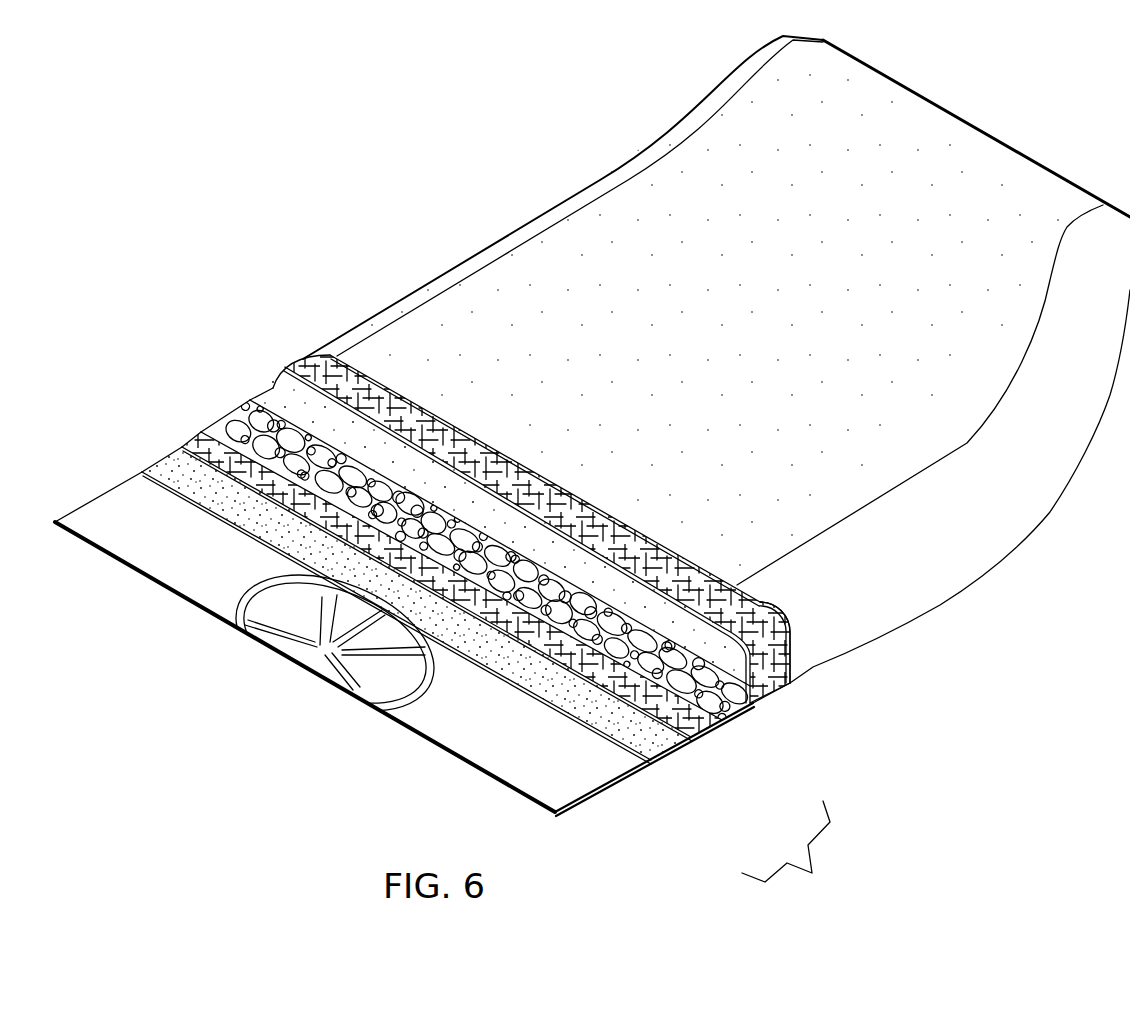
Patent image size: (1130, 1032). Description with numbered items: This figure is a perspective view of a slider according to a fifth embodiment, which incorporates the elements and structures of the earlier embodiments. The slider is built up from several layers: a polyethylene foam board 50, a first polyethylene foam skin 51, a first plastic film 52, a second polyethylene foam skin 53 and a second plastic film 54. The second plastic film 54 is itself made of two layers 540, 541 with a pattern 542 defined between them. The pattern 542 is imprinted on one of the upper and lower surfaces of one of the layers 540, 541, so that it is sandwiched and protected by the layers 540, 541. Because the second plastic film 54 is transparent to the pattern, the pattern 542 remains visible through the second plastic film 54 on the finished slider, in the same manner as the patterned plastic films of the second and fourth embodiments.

The polyethylene foam board 50 is at (727, 683).
The first polyethylene foam skin 51 is at (768, 665).
The first plastic film 52 is at (815, 612).
The second polyethylene foam skin 53 is at (207, 437).
The second plastic film 54 is at (798, 854).
The layer 540 is at (653, 760).
The layer 541 is at (577, 777).
The pattern 542 is at (275, 640).